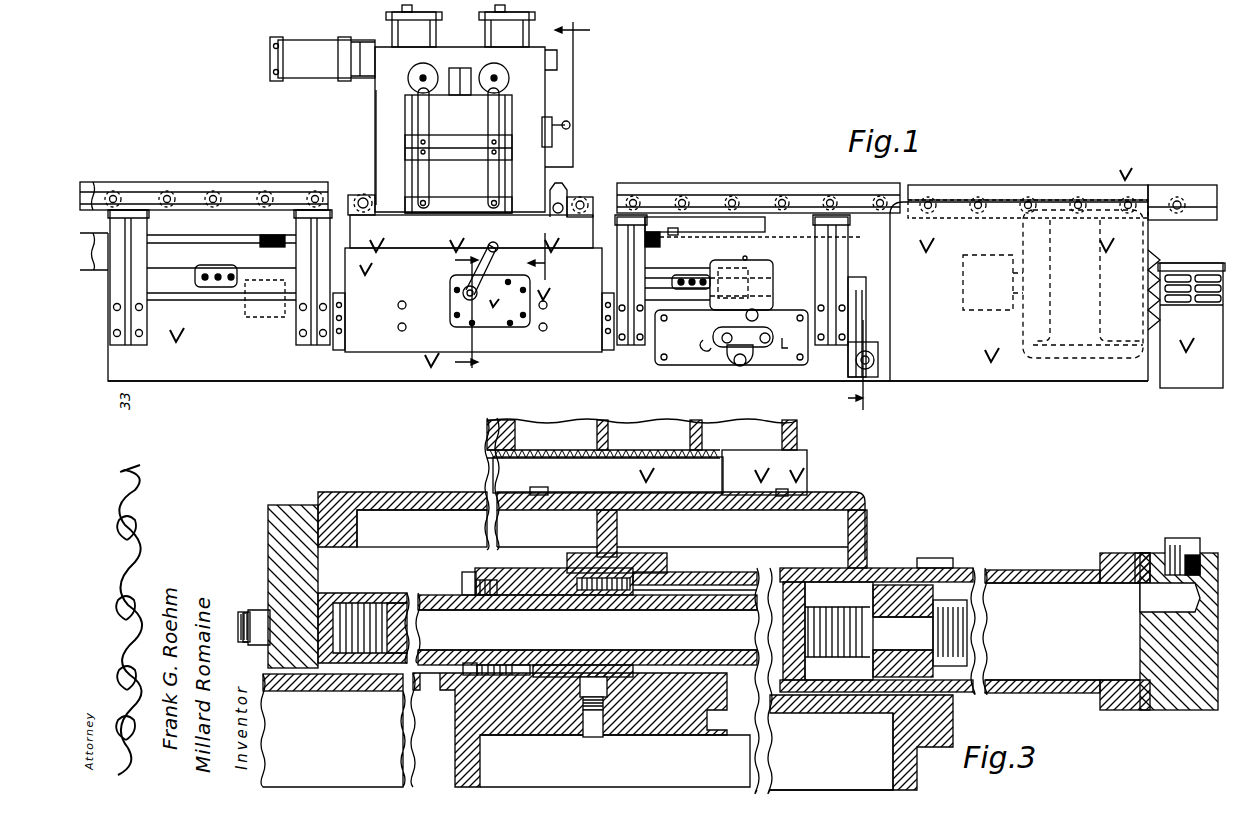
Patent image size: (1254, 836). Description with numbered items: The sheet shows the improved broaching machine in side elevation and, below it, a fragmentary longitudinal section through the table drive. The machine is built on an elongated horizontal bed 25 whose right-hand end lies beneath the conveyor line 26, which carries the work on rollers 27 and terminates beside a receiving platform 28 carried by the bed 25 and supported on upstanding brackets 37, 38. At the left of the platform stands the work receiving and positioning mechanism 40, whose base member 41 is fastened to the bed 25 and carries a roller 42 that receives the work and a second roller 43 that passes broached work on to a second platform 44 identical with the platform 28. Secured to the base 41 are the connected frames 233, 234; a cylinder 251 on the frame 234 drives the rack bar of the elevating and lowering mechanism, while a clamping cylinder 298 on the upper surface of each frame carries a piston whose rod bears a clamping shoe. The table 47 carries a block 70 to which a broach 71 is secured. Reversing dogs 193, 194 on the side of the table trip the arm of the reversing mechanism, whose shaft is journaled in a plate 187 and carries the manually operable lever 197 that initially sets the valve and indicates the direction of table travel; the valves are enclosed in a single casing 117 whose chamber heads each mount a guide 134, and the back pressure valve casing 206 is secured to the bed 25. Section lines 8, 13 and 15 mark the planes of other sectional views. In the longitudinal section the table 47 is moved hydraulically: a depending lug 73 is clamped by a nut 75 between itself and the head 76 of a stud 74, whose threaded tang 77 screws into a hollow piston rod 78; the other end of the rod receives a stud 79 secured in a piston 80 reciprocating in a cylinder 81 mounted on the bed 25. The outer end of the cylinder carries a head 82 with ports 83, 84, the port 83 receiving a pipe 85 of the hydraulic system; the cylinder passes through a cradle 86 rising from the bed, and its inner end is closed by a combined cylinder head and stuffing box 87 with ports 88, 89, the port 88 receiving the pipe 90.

In FIG. 1, the section line 8- 8 is at (461, 312).
In FIG. 1, the section line 13 is at (870, 365).
In FIG. 1, the section line 15 is at (570, 151).
In FIG. 1, the bed 25 is at (518, 380).
In FIG. 3, the bed 25 is at (920, 760).
In FIG. 1, the conveyor line 26 is at (1097, 186).
In FIG. 1, the rollers 27 is at (1178, 189).
In FIG. 1, the receiving platform 28 is at (716, 186).
In FIG. 1, the bracket 37 is at (642, 348).
In FIG. 1, the bracket 38 is at (834, 348).
In FIG. 1, the work receiving and positioning mechanism 40 is at (385, 64).
In FIG. 1, the base member 41 is at (388, 238).
In FIG. 1, the roller 42 is at (588, 200).
In FIG. 1, the second roller 43 is at (360, 196).
In FIG. 1, the second platform 44 is at (200, 183).
In FIG. 3, the table 47 is at (867, 509).
In FIG. 3, the block 70 is at (806, 480).
In FIG. 3, the broach 71 is at (722, 458).
In FIG. 3, the lug 73 is at (297, 512).
In FIG. 3, the stud 74 is at (292, 626).
In FIG. 3, the nut 75 is at (252, 648).
In FIG. 3, the head 76 is at (330, 603).
In FIG. 3, the threaded tang 77 is at (362, 603).
In FIG. 3, the hollow piston rod 78 is at (437, 598).
In FIG. 3, the stud 79 is at (926, 660).
In FIG. 3, the piston 80 is at (928, 596).
In FIG. 3, the cylinder 81 is at (1045, 583).
In FIG. 3, the head 82 is at (1158, 580).
In FIG. 3, the port 83 is at (1206, 572).
In FIG. 3, the port 84 is at (1128, 585).
In FIG. 3, the conduit 85 is at (1178, 548).
In FIG. 3, the cradle 86 is at (936, 560).
In FIG. 3, the combined cylinder head and stuffing box 87 is at (606, 566).
In FIG. 3, the port 88 is at (580, 680).
In FIG. 3, the port 89 is at (632, 583).
In FIG. 3, the conduit 90 is at (591, 738).
In FIG. 1, the casing 117 is at (759, 266).
In FIG. 1, the guide 134 is at (852, 322).
In FIG. 1, the plate 187 is at (451, 297).
In FIG. 1, the reversing dog 193 is at (211, 271).
In FIG. 1, the reversing dog 194 is at (690, 276).
In FIG. 1, the manually operable lever 197 is at (483, 256).
In FIG. 1, the casing 206 is at (878, 370).
In FIG. 1, the frame 233 is at (540, 107).
In FIG. 1, the frame 234 is at (381, 108).
In FIG. 1, the cylinder 251 is at (322, 78).
In FIG. 1, the cylinder 298 is at (483, 31).